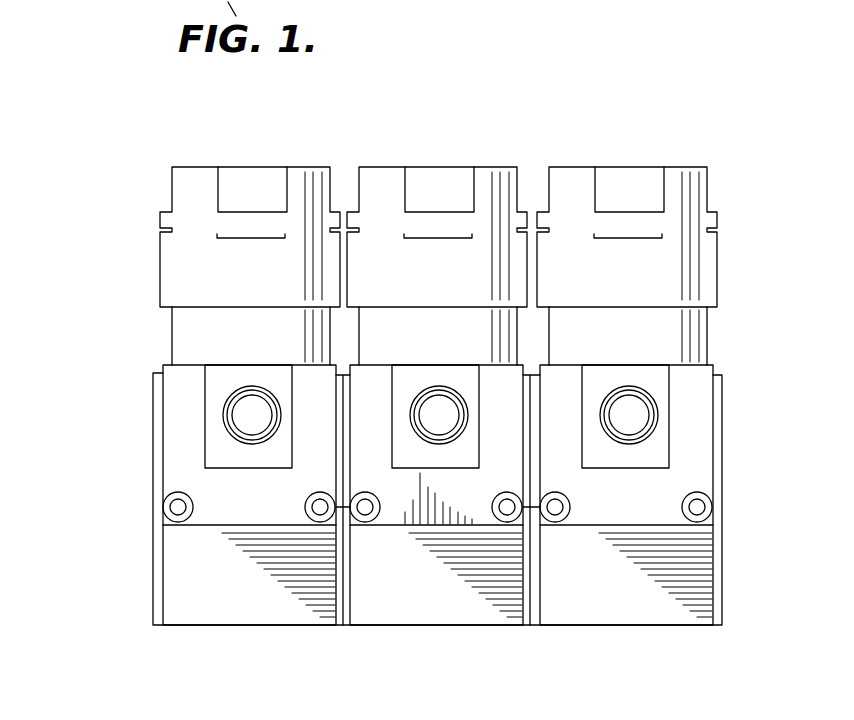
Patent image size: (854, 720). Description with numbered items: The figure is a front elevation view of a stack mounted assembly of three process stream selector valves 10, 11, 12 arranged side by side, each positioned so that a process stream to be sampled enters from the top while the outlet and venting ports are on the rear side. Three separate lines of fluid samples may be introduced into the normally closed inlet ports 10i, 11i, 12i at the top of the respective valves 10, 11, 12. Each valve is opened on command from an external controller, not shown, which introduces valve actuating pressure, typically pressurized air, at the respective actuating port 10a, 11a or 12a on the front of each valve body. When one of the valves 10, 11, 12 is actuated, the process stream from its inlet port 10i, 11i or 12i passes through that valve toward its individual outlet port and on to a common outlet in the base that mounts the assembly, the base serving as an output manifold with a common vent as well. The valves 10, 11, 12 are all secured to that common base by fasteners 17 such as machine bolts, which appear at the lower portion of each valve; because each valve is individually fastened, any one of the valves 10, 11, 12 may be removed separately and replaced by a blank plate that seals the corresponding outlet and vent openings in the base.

The process stream selector valve 10 is at (146, 398).
The process stream selector valve 11 is at (418, 580).
The process stream selector valve 12 is at (712, 447).
The inlet port 10i is at (255, 167).
The inlet port 11i is at (440, 167).
The inlet port 12i is at (633, 167).
The actuating port 10a is at (240, 408).
The actuating port 11a is at (440, 405).
The actuating port 12a is at (632, 412).
The fasteners 17 is at (310, 518).